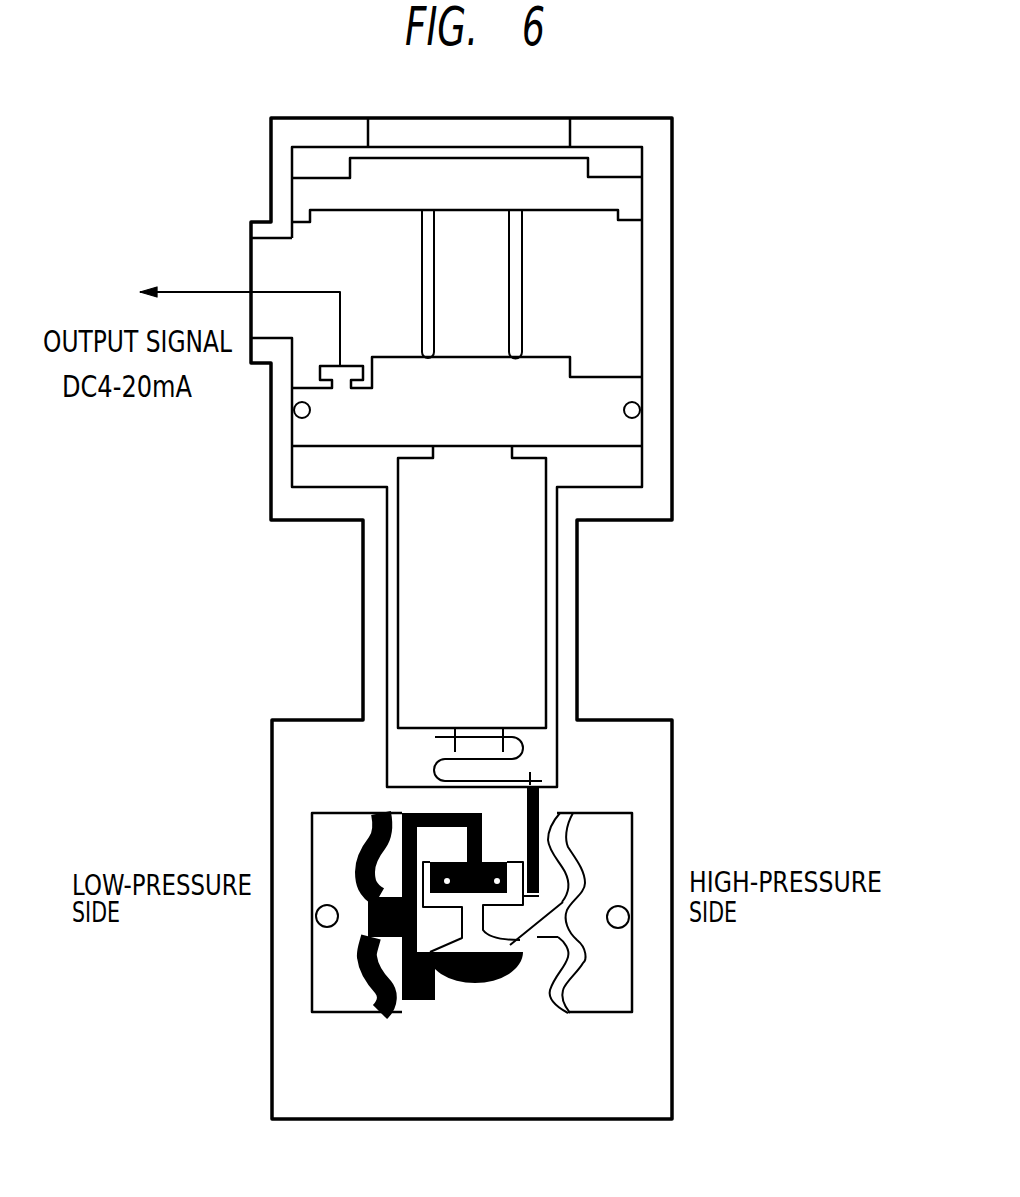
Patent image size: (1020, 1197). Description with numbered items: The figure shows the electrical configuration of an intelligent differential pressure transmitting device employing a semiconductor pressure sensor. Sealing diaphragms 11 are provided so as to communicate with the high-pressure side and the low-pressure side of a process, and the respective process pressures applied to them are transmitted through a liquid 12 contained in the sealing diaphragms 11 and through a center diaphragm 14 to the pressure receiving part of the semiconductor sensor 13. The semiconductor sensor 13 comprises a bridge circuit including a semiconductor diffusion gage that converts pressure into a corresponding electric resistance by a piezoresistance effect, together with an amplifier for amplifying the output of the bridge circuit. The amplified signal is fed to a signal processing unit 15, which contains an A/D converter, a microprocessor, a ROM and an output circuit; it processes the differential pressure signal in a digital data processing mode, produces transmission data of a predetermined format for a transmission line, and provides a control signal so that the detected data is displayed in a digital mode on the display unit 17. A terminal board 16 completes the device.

The sealing diaphragms 11 is at (368, 957).
The liquid 12 is at (558, 913).
The semiconductor sensor 13 is at (475, 893).
The center diaphragm 14 is at (450, 987).
The signal processing unit 15 is at (533, 589).
The terminal board 16 is at (595, 428).
The display unit 17 is at (575, 168).